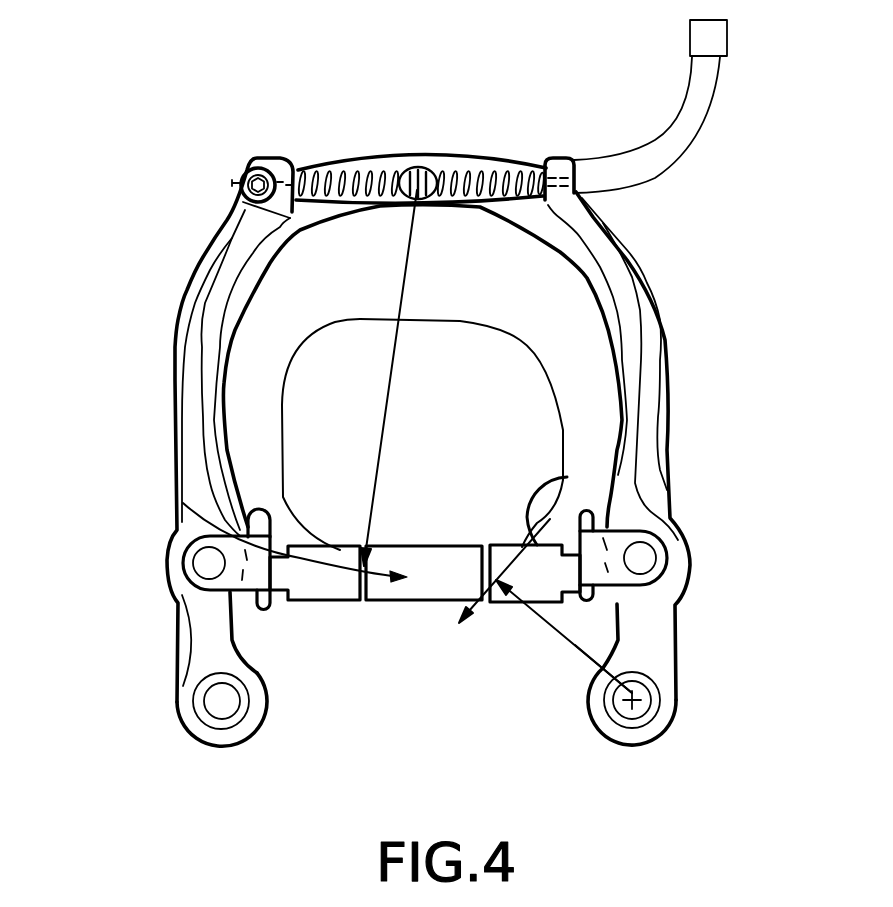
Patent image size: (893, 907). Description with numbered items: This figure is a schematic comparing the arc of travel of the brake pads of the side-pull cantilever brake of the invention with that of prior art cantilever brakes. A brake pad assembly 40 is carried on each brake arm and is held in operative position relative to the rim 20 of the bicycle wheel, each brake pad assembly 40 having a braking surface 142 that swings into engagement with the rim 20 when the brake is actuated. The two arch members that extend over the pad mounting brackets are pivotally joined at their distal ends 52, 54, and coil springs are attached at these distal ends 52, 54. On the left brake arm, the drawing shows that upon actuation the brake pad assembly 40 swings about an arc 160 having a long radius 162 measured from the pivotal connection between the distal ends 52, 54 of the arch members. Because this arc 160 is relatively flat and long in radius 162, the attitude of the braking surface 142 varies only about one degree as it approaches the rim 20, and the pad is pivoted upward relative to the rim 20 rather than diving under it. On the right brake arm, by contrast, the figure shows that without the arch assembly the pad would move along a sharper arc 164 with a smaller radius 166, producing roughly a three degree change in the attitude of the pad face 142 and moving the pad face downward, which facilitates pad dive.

The rim 20 is at (360, 547).
The brake pad assembly 40 is at (303, 616).
The distal end of first arch member 52 is at (408, 166).
The distal end of second arch member 54 is at (433, 168).
The braking surface 142 is at (380, 587).
The arc 160 is at (343, 583).
The radius 162 is at (402, 295).
The sharper arc 164 is at (567, 479).
The smaller radius 166 is at (578, 640).